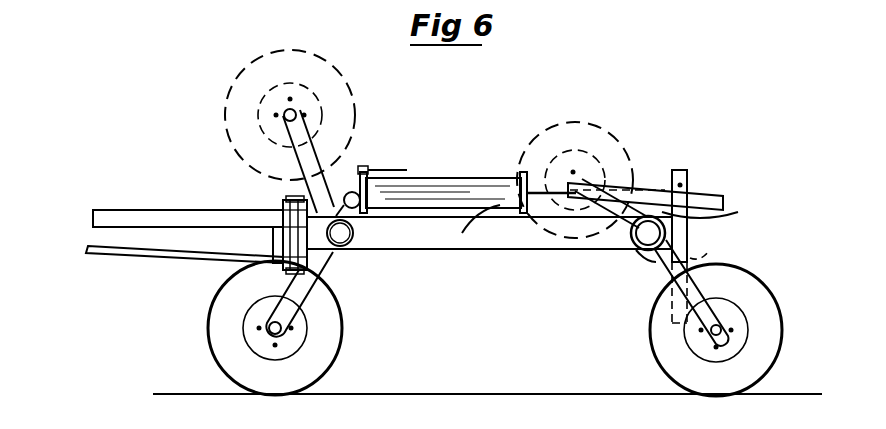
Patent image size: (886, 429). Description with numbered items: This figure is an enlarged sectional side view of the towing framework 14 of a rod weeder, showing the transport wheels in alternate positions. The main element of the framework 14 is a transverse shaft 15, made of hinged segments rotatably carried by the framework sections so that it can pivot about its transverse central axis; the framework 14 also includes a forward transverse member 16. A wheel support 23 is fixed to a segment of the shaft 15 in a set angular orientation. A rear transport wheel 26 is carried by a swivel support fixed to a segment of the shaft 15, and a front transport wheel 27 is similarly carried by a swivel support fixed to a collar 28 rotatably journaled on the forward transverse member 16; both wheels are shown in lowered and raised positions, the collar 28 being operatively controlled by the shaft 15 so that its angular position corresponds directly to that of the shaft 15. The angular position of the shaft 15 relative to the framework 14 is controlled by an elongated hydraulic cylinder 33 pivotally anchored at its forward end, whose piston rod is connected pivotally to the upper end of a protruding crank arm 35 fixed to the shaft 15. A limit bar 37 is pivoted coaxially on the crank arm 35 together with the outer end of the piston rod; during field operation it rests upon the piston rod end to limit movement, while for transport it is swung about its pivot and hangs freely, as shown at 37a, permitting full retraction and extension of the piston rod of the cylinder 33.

The towing framework 14 is at (424, 254).
The transverse shaft 15 is at (631, 234).
The forward transverse member 16 is at (350, 177).
The wheel support 23 is at (698, 253).
The rear transport wheel 26 is at (612, 152).
The front transport wheel 27 is at (352, 121).
The collar 28 is at (655, 260).
The hydraulic cylinder 33 is at (447, 189).
The crank arm 35 is at (669, 200).
The limit bar 37 is at (698, 188).
The freely hanging limit bar position 37a is at (671, 302).